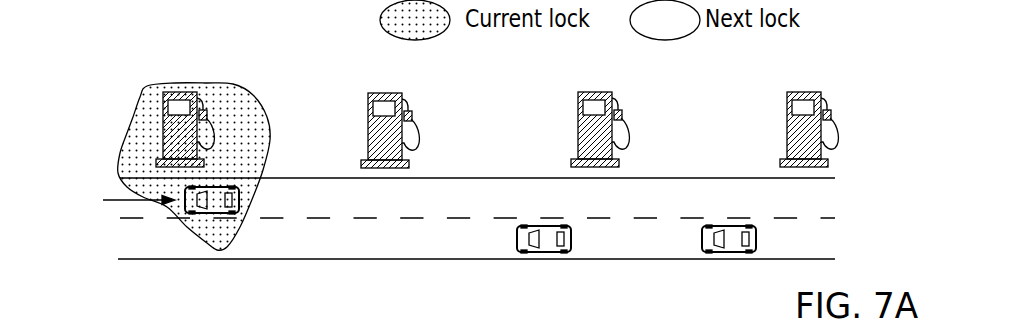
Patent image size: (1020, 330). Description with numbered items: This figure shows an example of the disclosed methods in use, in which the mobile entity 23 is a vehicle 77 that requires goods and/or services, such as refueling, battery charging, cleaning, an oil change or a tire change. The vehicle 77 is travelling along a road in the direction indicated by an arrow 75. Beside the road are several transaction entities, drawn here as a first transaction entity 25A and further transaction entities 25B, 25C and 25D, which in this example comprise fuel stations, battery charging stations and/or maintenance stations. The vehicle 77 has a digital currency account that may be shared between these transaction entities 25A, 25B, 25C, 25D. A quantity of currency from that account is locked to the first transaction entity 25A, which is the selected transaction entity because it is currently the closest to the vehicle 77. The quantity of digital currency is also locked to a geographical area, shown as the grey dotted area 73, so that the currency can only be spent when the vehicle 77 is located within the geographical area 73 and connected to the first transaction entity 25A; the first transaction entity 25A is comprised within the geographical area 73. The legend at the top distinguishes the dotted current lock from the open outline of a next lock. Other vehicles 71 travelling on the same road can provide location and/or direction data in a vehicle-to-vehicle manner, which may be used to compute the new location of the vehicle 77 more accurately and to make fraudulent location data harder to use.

The mobile entity 23 is at (240, 195).
The first transaction entity 25A is at (157, 112).
The transaction entity 25B is at (368, 133).
The transaction entity 25C is at (578, 132).
The transaction entity 25D is at (787, 133).
The other vehicles 71 is at (545, 253).
The geographical area 73 is at (122, 145).
The arrow 75 is at (103, 200).
The vehicle 77 is at (223, 187).